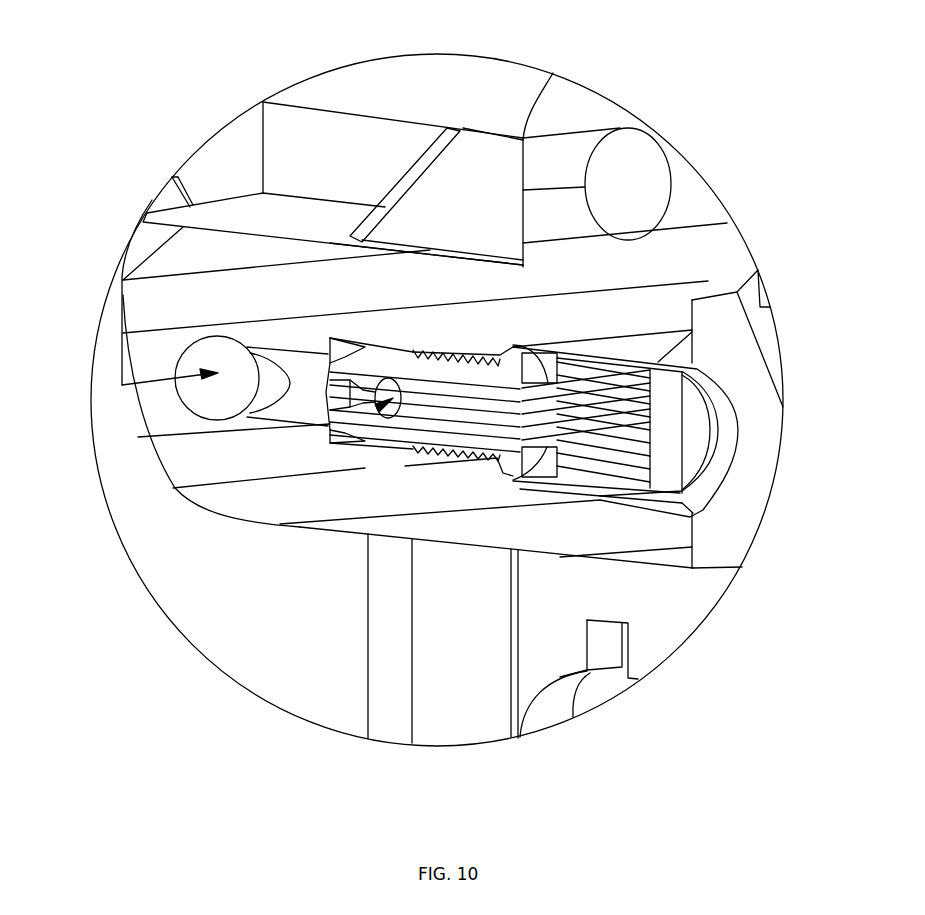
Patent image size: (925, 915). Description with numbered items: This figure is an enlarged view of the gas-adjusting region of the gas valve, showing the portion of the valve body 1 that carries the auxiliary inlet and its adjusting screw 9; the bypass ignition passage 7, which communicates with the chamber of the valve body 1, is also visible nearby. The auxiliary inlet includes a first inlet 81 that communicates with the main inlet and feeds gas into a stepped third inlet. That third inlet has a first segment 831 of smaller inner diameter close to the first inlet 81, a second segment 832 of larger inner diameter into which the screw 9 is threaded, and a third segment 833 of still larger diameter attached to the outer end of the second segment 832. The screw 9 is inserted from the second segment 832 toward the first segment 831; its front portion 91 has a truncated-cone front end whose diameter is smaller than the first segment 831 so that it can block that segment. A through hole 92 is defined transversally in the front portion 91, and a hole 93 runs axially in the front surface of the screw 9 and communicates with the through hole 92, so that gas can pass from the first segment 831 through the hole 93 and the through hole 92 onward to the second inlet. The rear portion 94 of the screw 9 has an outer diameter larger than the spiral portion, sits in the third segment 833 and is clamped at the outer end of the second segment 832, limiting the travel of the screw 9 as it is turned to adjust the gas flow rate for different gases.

The valve body 1 is at (283, 207).
The bypass ignition passage 7 is at (632, 183).
The first inlet 81 is at (182, 377).
The first segment 831 is at (190, 207).
The second segment 832 is at (392, 350).
The third segment 833 is at (568, 355).
The screw 9 is at (567, 453).
The front portion 91 is at (398, 432).
The through hole 92 is at (378, 406).
The hole 93 is at (330, 400).
The rear portion 94 is at (620, 433).